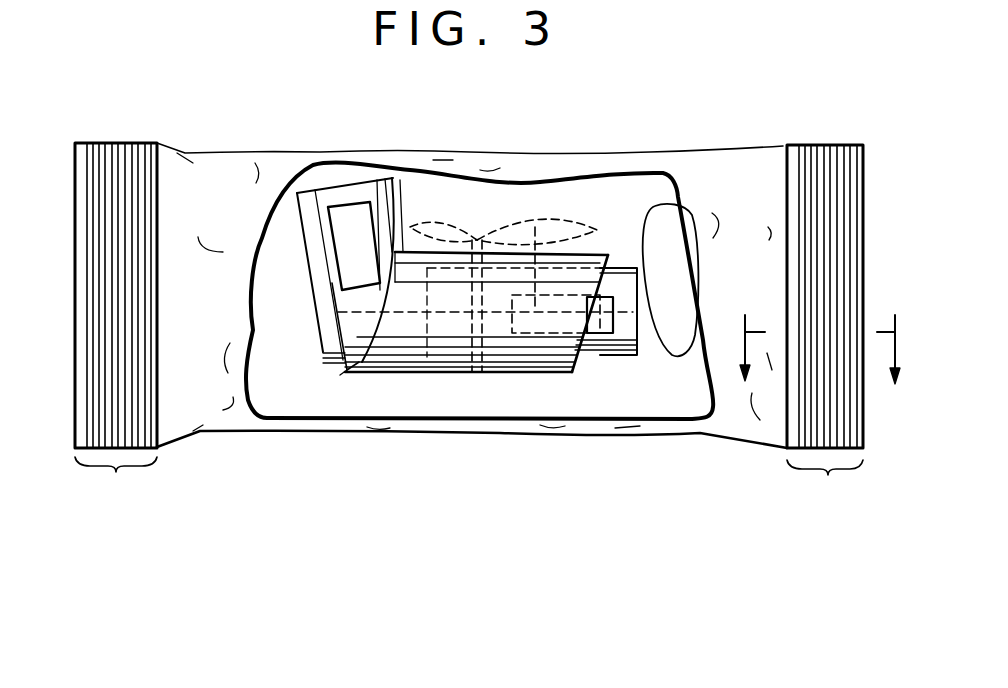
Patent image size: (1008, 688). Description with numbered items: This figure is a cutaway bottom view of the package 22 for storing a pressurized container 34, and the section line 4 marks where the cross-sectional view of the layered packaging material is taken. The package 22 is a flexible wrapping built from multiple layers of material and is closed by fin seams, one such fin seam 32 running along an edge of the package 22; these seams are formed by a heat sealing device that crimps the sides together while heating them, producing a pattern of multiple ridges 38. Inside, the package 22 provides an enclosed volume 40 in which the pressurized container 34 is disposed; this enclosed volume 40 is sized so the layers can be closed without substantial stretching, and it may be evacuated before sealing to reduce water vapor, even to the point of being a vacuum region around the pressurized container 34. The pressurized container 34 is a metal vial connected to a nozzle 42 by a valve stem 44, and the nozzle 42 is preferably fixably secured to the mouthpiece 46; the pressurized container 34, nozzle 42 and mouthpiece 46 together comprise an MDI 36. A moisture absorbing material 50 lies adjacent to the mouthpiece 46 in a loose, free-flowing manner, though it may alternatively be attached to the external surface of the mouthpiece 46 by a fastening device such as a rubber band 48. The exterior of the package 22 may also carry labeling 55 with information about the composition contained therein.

The package 22 is at (192, 232).
The fin seam 32 is at (132, 313).
The ridges 38 is at (469, 486).
The enclosed volume 40 is at (680, 392).
The MDI 36 is at (446, 208).
The mouthpiece 46 is at (320, 216).
The nozzle 42 is at (340, 376).
The valve stem 44 is at (383, 377).
The rubber band 48 is at (480, 376).
The pressurized container 34 is at (590, 353).
The labeling 55 is at (345, 212).
The moisture absorbing material 50 is at (577, 232).
The section line 4- 4 is at (818, 328).